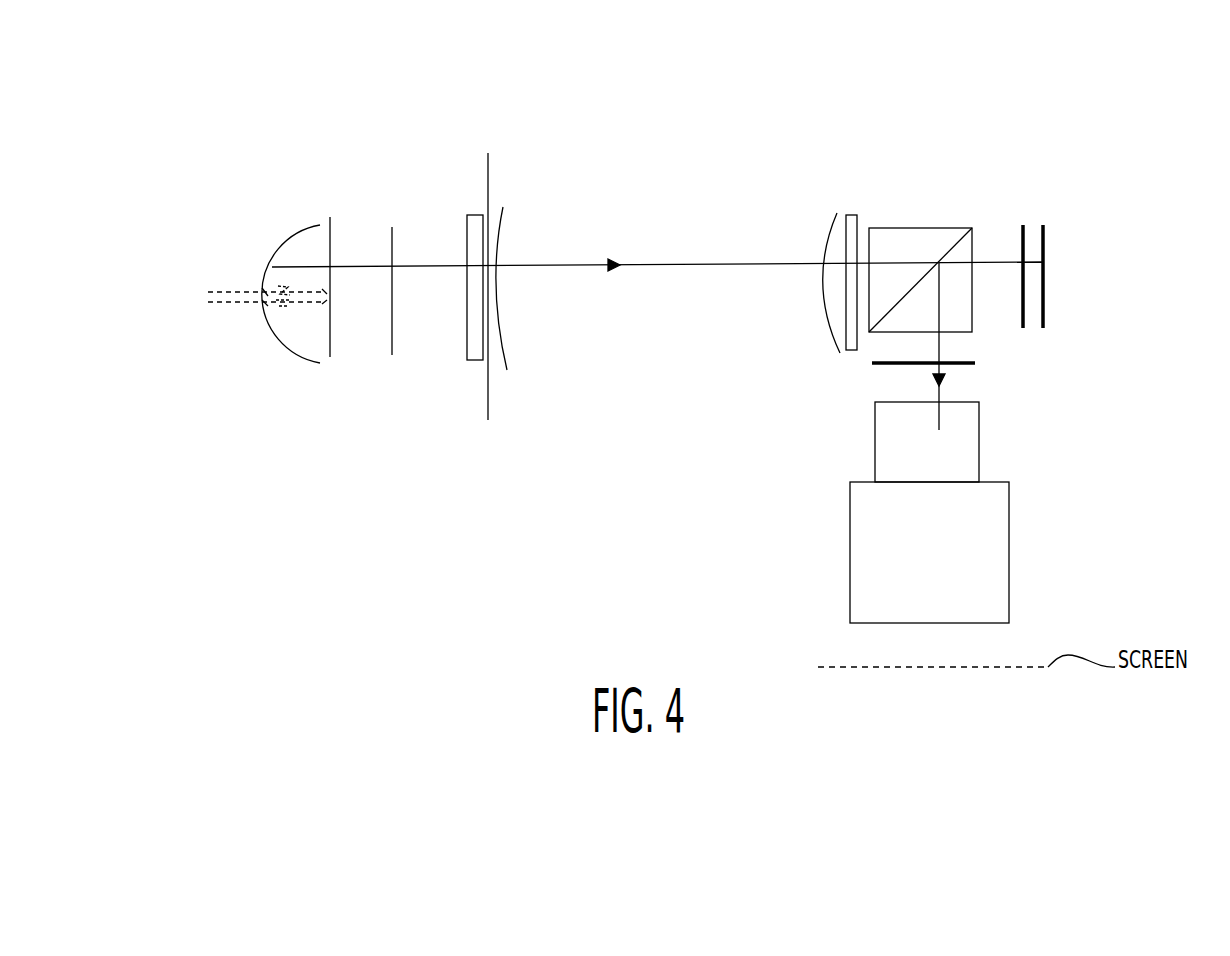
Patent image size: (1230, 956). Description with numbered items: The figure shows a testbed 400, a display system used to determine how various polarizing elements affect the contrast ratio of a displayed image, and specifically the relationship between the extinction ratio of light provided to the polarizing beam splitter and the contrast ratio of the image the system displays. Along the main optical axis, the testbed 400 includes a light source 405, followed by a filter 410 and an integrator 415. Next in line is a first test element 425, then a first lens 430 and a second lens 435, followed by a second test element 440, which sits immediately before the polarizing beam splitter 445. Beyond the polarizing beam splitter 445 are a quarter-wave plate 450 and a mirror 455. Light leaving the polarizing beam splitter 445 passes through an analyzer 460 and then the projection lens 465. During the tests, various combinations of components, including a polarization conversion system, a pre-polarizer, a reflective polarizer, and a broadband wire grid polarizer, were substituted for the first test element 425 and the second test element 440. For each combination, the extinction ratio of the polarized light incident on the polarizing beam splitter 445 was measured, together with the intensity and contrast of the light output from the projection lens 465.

The testbed 400 is at (123, 71).
The light source 405 is at (287, 337).
The filter 410 is at (330, 358).
The integrator 415 is at (391, 357).
The first test element 425 is at (487, 372).
The first lens 430 is at (503, 338).
The second lens 435 is at (830, 338).
The second test element 440 is at (852, 213).
The polarizing beam splitter 445 is at (911, 228).
The quarter-wave plate 450 is at (1025, 325).
The mirror 455 is at (1045, 240).
The analyzer 460 is at (973, 366).
The projection lens 465 is at (850, 571).